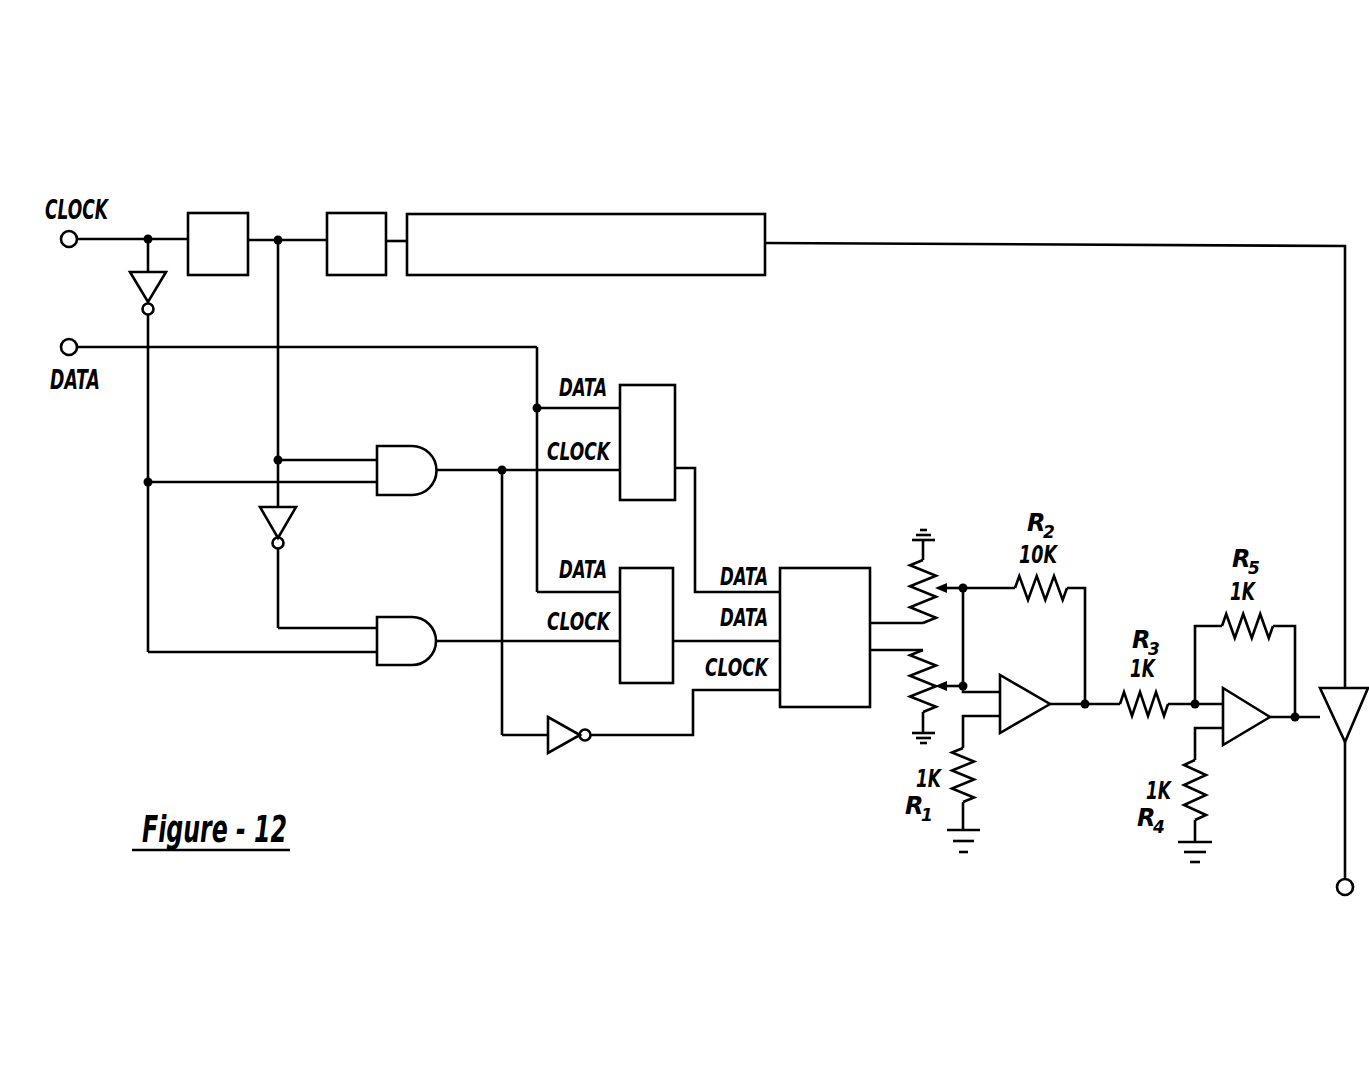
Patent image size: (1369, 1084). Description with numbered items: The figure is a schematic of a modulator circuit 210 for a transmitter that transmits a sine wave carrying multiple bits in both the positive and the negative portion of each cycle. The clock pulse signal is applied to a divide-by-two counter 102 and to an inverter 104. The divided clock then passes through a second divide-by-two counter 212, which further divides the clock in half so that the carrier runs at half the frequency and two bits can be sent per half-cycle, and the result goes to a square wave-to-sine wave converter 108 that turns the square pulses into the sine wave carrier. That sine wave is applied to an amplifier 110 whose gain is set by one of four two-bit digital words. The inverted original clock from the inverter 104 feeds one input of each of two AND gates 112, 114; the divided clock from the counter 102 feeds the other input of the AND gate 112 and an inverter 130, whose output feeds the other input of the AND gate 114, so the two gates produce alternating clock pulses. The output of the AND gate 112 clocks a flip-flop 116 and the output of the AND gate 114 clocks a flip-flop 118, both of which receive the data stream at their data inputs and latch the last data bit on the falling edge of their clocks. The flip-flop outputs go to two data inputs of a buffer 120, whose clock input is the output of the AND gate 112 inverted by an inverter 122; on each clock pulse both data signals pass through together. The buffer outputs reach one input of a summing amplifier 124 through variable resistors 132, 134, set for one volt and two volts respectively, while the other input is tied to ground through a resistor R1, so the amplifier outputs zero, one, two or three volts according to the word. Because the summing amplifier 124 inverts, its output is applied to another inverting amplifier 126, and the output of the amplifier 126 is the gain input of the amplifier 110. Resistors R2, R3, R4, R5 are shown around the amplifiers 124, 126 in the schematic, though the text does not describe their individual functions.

The divide-by-two counter 102 is at (218, 213).
The second divide-by-two counter 212 is at (353, 213).
The square wave-to-sine wave converter 108 is at (555, 214).
The inverter 104 is at (137, 290).
The inverter 130 is at (263, 525).
The AND gate 112 is at (403, 446).
The AND gate 114 is at (393, 665).
The flip-flop 116 is at (675, 412).
The flip-flop 118 is at (637, 683).
The buffer 120 is at (825, 705).
The inverter 122 is at (563, 748).
The variable resistor 132 is at (917, 560).
The variable resistor 134 is at (917, 708).
The summing amplifier 124 is at (1037, 718).
The inverting amplifier 126 is at (1253, 733).
The amplifier 110 is at (1330, 727).
The modulator circuit 210 is at (792, 146).
The resistor R1 is at (963, 775).
The resistor R2 is at (1041, 588).
The resistor R3 is at (1144, 704).
The resistor R4 is at (1195, 790).
The resistor R5 is at (1247, 626).